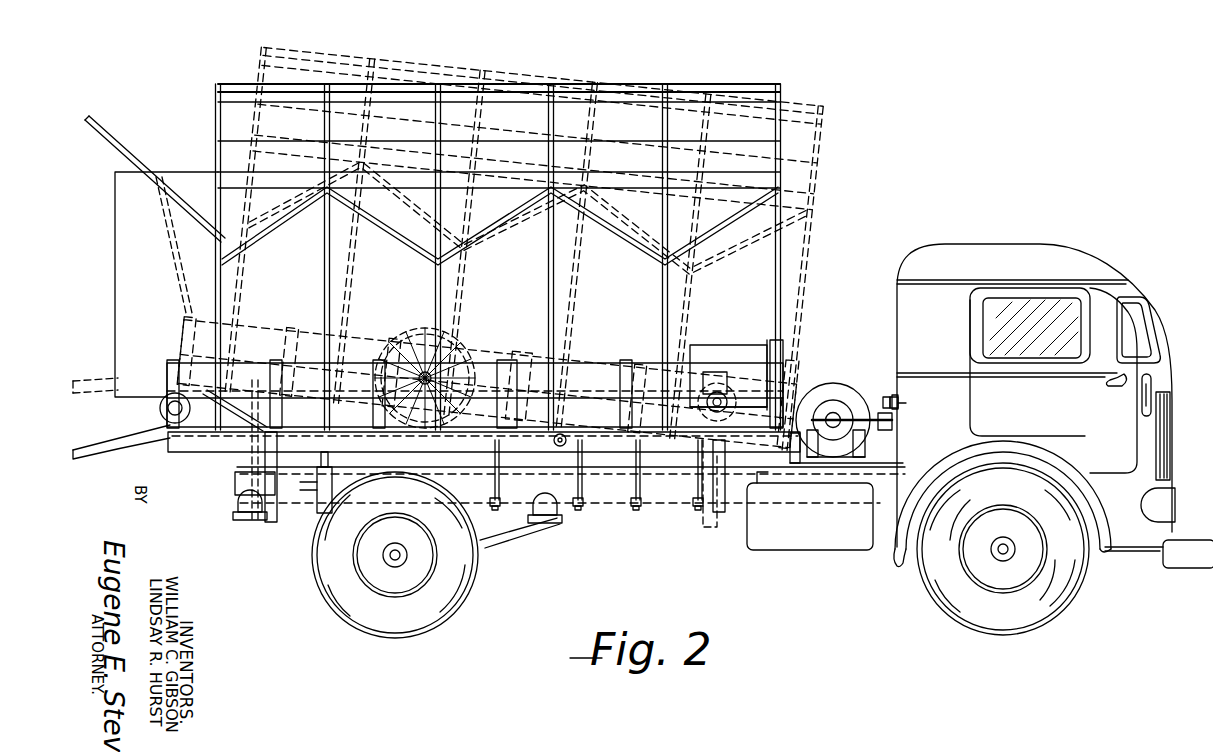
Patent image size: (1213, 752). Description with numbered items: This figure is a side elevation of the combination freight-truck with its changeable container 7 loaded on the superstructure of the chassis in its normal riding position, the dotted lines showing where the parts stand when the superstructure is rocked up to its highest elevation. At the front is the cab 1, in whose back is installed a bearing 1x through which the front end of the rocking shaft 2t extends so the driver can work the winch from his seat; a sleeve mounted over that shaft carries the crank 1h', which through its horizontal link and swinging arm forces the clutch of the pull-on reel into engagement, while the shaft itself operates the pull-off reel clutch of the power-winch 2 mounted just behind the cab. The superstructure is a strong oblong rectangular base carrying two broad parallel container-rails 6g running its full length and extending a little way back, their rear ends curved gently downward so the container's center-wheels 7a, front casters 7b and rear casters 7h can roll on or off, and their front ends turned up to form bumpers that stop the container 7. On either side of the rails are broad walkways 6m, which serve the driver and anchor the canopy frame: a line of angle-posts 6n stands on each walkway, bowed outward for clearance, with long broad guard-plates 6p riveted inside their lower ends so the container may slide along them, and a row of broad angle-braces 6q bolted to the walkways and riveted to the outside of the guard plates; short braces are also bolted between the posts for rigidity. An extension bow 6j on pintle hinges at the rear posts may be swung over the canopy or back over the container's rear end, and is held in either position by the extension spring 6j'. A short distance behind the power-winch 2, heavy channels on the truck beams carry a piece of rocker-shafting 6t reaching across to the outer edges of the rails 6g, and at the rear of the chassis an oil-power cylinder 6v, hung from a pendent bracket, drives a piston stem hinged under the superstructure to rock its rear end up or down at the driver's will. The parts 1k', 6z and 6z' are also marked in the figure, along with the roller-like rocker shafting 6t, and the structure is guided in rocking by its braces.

The cab 1 is at (968, 243).
The crank 1h' is at (889, 367).
The bracket pin 1k' is at (872, 369).
The bearing 1x is at (900, 397).
The power-winch 2 is at (833, 384).
The rocking shaft 2t is at (884, 398).
The container-rails 6g is at (100, 452).
The extension bow 6j is at (155, 165).
The extension spring 6j' is at (156, 245).
The walkways 6m is at (228, 440).
The angle-posts 6n is at (324, 255).
The guard-plates 6p is at (720, 333).
The angle-braces 6q is at (592, 378).
The rocker-shafting 6t is at (558, 448).
The oil-power cylinder 6v is at (312, 514).
The rear support bracket 6z is at (245, 468).
The front support bracket 6z' is at (715, 506).
The changeable container 7 is at (752, 272).
The center-wheels 7a is at (512, 348).
The front casters 7b is at (728, 396).
The rear casters 7h is at (160, 407).